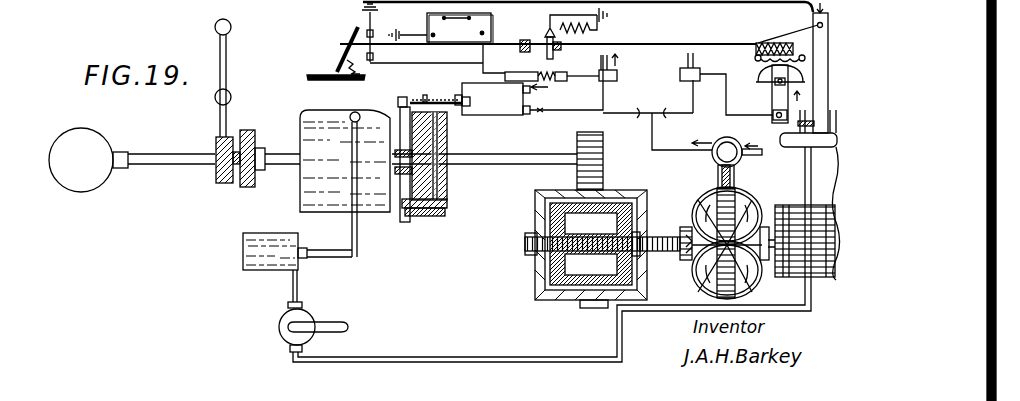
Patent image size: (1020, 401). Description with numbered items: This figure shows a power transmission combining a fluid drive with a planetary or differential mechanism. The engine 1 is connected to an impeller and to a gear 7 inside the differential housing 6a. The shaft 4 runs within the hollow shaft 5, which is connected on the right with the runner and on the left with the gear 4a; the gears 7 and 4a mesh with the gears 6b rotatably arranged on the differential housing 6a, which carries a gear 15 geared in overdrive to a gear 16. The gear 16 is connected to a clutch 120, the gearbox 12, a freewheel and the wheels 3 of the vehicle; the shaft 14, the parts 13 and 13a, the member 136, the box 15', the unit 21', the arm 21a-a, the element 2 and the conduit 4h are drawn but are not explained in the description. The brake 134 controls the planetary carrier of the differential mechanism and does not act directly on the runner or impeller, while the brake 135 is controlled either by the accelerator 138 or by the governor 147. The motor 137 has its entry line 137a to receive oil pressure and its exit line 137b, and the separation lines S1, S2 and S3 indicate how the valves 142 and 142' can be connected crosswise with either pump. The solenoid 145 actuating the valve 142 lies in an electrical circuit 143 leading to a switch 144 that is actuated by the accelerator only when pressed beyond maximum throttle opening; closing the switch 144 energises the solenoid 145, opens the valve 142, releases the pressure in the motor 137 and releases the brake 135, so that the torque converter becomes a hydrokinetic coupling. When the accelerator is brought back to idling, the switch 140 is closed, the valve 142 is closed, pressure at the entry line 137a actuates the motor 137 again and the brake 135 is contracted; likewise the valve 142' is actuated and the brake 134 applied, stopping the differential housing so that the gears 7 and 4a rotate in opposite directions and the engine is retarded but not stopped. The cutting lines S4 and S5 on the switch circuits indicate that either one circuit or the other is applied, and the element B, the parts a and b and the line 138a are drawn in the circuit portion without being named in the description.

The engine 1 is at (799, 141).
The differential 2 is at (757, 197).
The wheels 3 is at (104, 180).
The shaft 4 is at (787, 252).
The gear 4a is at (644, 221).
The conduit loop 4h is at (508, 358).
The hollow shaft 5 is at (680, 238).
The differential housing 6a is at (641, 194).
The gears 6b is at (591, 244).
The gear 7 is at (536, 229).
The gearbox 12 is at (318, 207).
The clutch disc 13 is at (240, 188).
The lever block 13a is at (215, 148).
The shaft 14 is at (171, 170).
The gear 15 is at (606, 162).
The control box 15' is at (277, 267).
The gear 16 is at (604, 158).
The pump 21' is at (279, 328).
The pump arm 21a-a is at (350, 322).
The clutch 120 is at (445, 136).
The brake 134 is at (430, 216).
The brake 135 is at (693, 186).
The clutch member 136 is at (718, 162).
The motor 137 is at (740, 143).
The entry line 137a is at (653, 128).
The exit line 137b is at (615, 66).
The accelerator 138 is at (340, 46).
The switch wire 138a is at (404, 56).
The switch 140 is at (366, 28).
The valve 142 is at (703, 67).
The valve 142' is at (624, 69).
The electrical circuit 143 is at (608, 15).
The switch 144 is at (545, 30).
The solenoid 145 is at (546, 66).
The governor 147 is at (752, 83).
The battery B is at (441, 28).
The contact a is at (520, 42).
The contact b is at (561, 44).
The separation line S1 is at (633, 114).
The separation line S2 is at (586, 106).
The separation line S3 is at (670, 129).
The cutting line S4 is at (390, 60).
The cutting line S5 is at (478, 78).